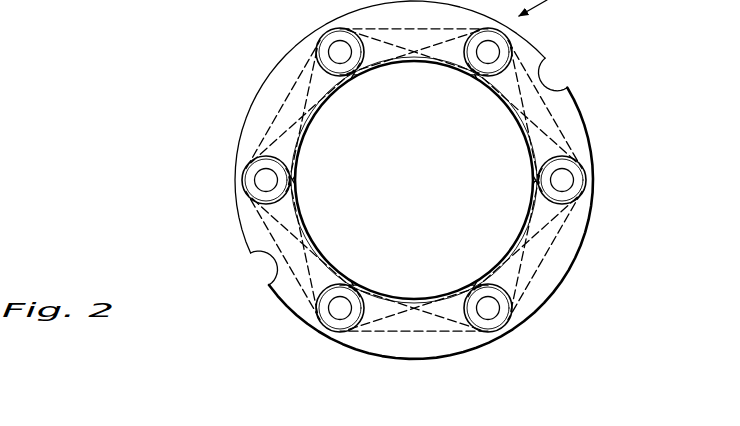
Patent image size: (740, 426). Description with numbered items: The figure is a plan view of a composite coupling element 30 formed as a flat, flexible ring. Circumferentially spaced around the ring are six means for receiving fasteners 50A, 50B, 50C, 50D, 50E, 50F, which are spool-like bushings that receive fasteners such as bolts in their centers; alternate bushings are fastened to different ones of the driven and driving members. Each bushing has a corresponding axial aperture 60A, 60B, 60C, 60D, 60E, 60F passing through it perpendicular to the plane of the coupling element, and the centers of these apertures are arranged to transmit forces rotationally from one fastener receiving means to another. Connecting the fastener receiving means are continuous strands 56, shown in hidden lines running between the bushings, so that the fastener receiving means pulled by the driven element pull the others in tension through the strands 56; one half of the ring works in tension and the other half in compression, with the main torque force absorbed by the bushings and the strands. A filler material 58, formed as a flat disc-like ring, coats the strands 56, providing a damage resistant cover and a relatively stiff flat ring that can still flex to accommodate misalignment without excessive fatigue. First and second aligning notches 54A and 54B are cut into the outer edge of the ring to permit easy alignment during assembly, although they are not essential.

The composite coupling element 30 is at (178, 126).
The filler material 58 is at (581, 121).
The first aligning notch 54A is at (552, 86).
The second aligning notch 54B is at (264, 256).
The continuous strands 56 is at (575, 241).
The means for receiving fasteners 50A is at (598, 162).
The means for receiving fasteners 50B is at (532, 328).
The means for receiving fasteners 50C is at (300, 322).
The means for receiving fasteners 50D is at (237, 171).
The means for receiving fasteners 50E is at (310, 19).
The means for receiving fasteners 50F is at (488, 52).
The axial aperture 60A is at (563, 179).
The axial aperture 60B is at (488, 308).
The axial aperture 60C is at (339, 309).
The axial aperture 60D is at (267, 180).
The axial aperture 60E is at (338, 52).
The axial aperture 60F is at (486, 50).